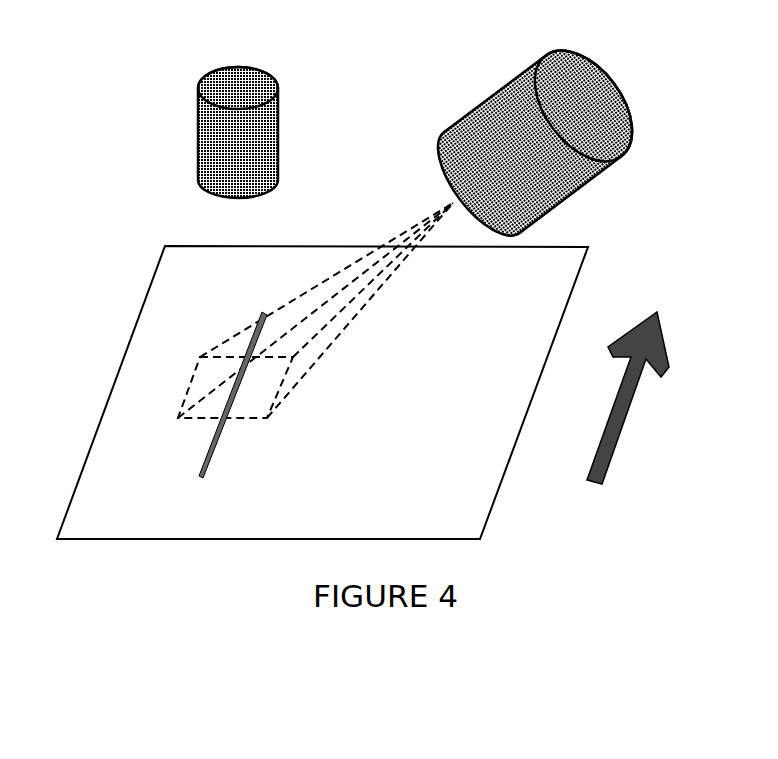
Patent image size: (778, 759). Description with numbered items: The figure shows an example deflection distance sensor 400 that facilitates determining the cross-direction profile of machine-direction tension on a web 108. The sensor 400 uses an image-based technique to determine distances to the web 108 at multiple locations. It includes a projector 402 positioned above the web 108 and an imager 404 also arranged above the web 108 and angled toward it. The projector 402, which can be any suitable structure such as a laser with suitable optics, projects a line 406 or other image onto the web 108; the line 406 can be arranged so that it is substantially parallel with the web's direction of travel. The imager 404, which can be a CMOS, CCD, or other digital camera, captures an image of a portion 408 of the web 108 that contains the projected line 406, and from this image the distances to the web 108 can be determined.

The deflection distance sensor 400 is at (124, 104).
The projector 402 is at (264, 68).
The imager 404 is at (583, 190).
The line 406 is at (211, 469).
The portion of the web 408 is at (267, 421).
The web 108 is at (122, 541).